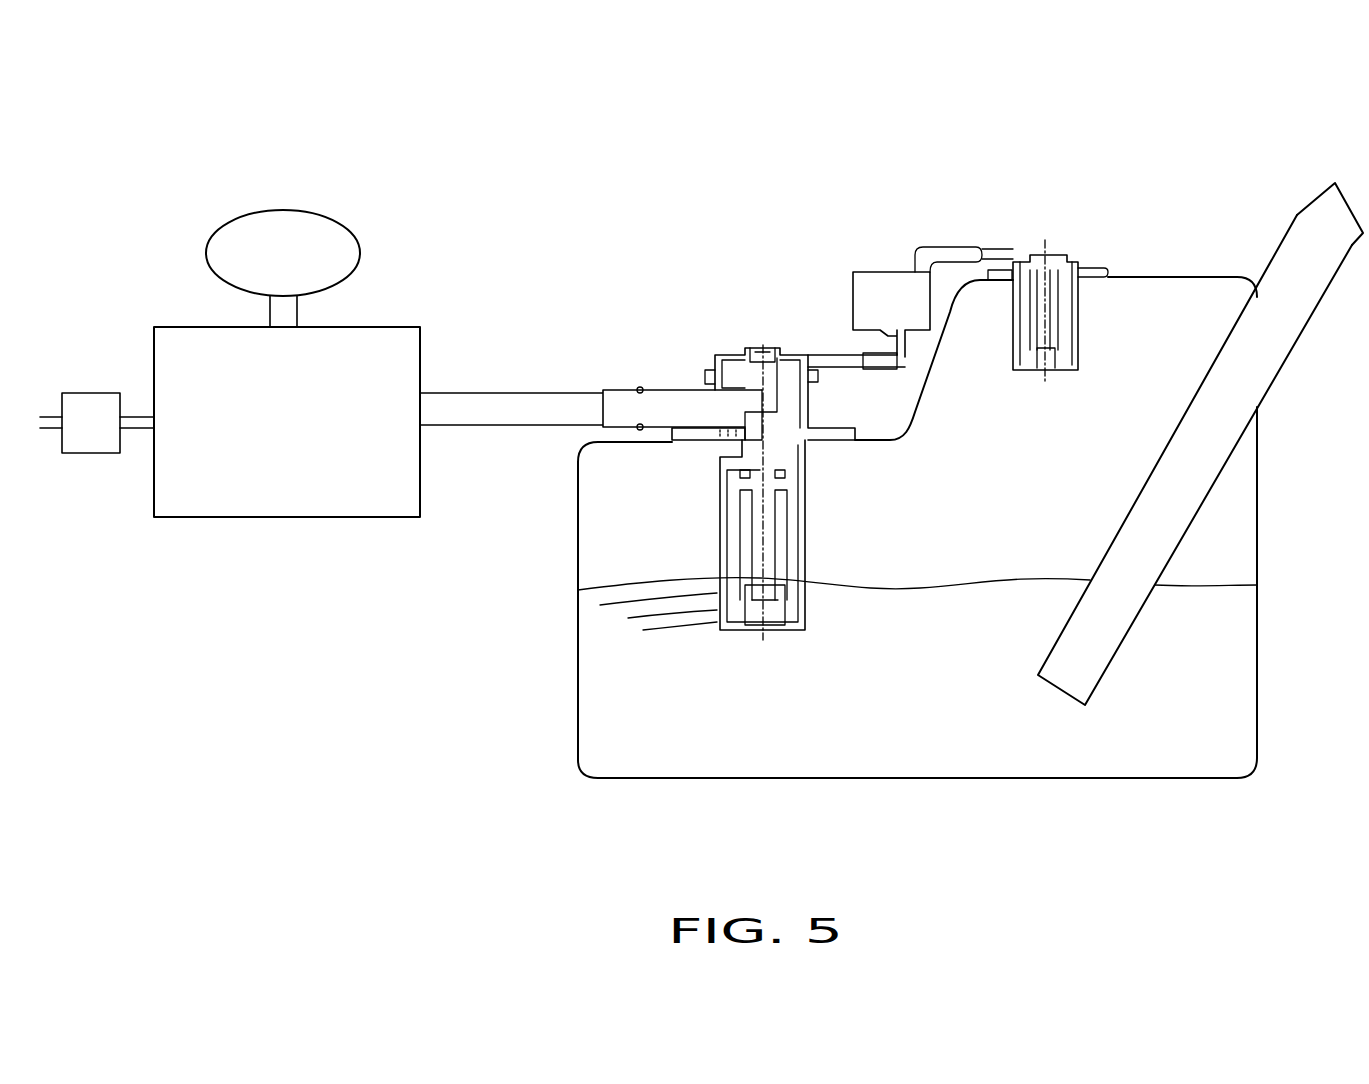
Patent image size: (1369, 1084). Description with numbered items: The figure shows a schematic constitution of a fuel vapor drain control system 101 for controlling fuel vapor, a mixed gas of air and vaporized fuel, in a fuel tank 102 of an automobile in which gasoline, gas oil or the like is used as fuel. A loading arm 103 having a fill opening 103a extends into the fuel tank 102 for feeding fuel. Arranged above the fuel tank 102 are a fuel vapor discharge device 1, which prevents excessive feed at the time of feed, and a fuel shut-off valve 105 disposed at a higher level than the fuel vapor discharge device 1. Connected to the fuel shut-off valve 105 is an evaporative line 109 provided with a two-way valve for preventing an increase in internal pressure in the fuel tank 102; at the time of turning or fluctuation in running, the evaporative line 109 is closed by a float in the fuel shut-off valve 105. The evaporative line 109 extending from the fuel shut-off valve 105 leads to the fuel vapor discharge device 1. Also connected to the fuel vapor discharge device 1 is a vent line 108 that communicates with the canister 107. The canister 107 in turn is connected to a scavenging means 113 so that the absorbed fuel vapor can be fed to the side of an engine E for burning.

The fuel vapor discharge device 1 is at (808, 503).
The fuel vapor drain control system 101 is at (765, 235).
The fuel tank 102 is at (888, 780).
The loading arm 103 is at (1277, 376).
The fill opening 103a is at (1347, 198).
The fuel shut-off valve 105 is at (1043, 372).
The canister 107 is at (396, 326).
The vent line 108 is at (532, 390).
The evaporative line 109 is at (862, 270).
The scavenging means 113 is at (91, 392).
The engine E is at (282, 207).